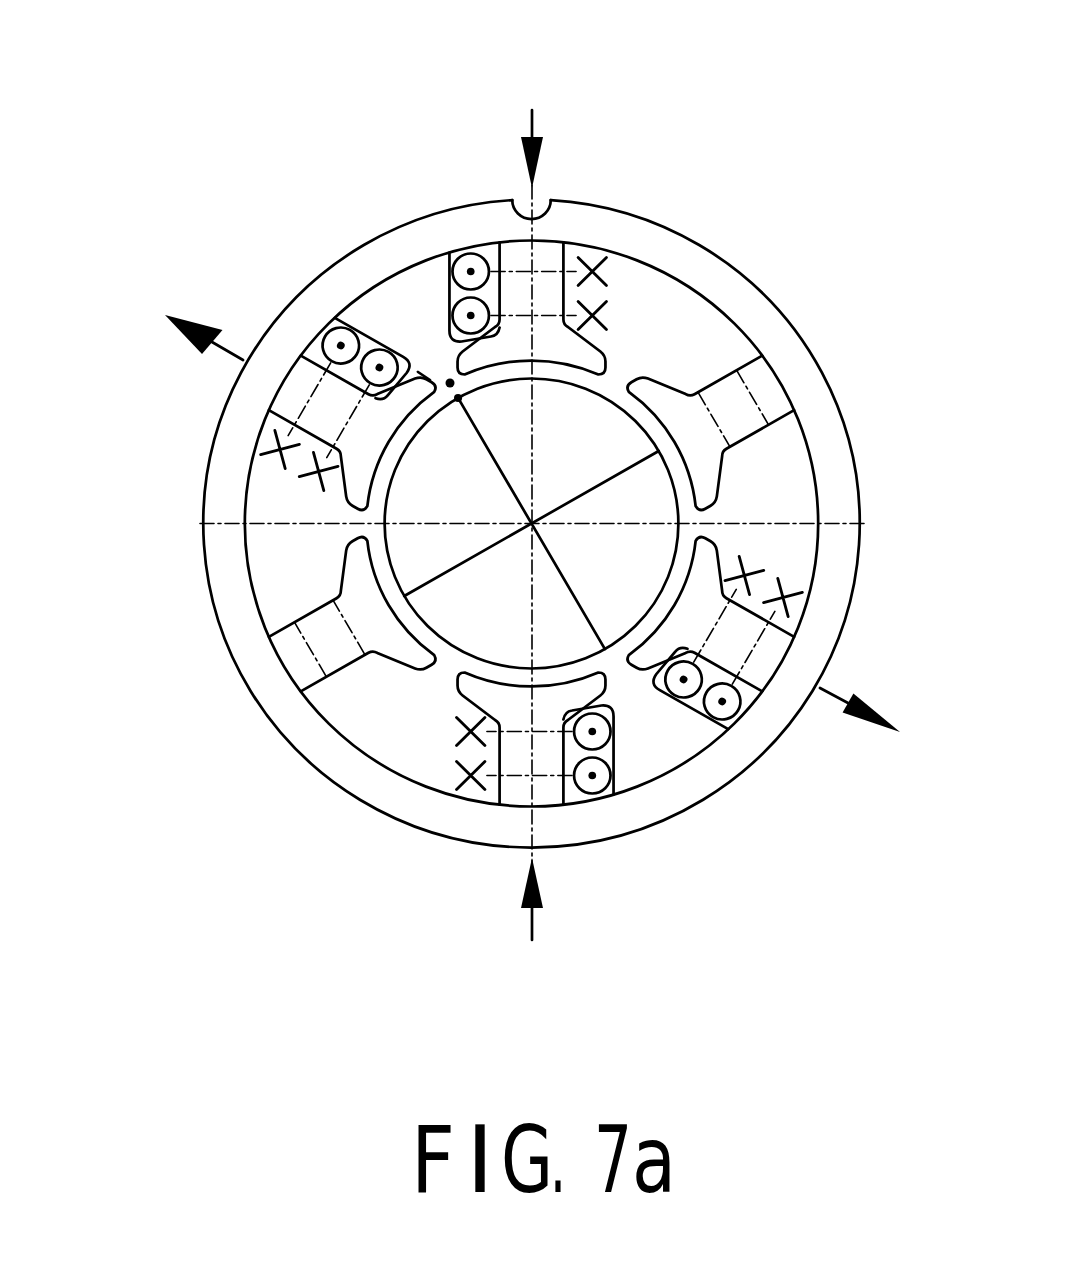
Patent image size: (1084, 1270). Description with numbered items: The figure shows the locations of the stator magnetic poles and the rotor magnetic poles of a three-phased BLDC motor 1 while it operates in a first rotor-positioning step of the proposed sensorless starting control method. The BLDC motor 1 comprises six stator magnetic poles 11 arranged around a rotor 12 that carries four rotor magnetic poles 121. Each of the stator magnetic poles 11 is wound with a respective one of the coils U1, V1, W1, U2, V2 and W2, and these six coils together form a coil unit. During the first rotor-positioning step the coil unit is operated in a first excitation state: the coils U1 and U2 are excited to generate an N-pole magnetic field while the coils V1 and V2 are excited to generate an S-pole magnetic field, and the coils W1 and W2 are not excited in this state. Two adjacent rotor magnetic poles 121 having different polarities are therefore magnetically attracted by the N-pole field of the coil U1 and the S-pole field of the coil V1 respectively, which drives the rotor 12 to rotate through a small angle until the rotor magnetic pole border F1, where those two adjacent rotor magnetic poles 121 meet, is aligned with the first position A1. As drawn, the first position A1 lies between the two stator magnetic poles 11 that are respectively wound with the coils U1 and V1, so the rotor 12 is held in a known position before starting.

The three-phased BLDC motor 1 is at (492, 509).
The stator magnetic poles 11 is at (663, 397).
The rotor 12 is at (352, 530).
The rotor magnetic poles 121 is at (455, 620).
The first position A1 is at (448, 380).
The rotor magnetic pole border F1 is at (420, 372).
The coil U1 is at (510, 267).
The coil U2 is at (520, 776).
The coil V1 is at (322, 387).
The coil V2 is at (783, 678).
The coil W1 is at (310, 653).
The coil W2 is at (755, 392).